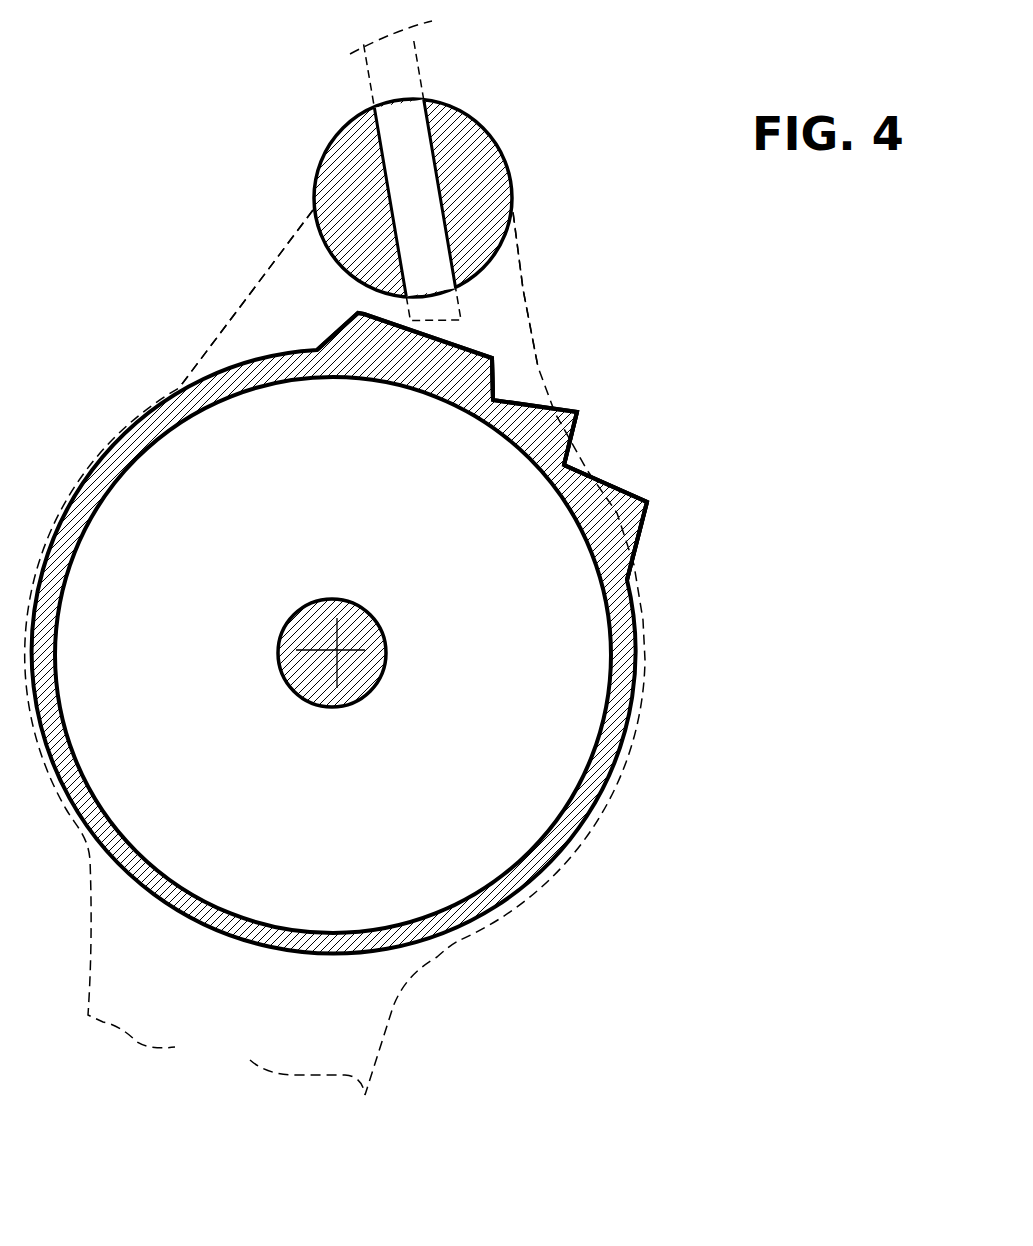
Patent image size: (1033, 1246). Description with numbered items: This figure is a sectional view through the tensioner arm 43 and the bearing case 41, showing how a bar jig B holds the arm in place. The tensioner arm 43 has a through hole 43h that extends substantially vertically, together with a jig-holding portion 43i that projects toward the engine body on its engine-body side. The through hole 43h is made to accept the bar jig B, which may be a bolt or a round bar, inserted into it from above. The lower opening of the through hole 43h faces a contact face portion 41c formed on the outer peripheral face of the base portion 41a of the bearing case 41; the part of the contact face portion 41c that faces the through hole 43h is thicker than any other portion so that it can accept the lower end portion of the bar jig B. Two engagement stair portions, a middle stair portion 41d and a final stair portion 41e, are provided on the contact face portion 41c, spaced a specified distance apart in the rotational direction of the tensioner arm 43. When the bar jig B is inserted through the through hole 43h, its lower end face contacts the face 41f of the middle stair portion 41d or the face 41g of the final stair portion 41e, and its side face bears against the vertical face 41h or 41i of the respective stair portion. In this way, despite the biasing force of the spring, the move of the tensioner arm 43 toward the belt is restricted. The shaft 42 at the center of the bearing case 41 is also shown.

The bearing case 41 is at (693, 682).
The base portion 41a is at (607, 787).
The contact face portion 41c is at (512, 329).
The middle stair portion 41d is at (529, 388).
The final stair portion 41e is at (625, 455).
The face of the middle stair portion 41f is at (503, 440).
The face of the final stair portion 41g is at (570, 515).
The vertical face of the middle stair portion 41h is at (460, 402).
The vertical face of the final stair portion 41i is at (565, 446).
The shaft 42 is at (377, 687).
The tensioner arm 43 is at (247, 297).
The through hole 43h is at (402, 100).
The jig-holding portion 43i is at (320, 163).
The bar jig B is at (372, 83).